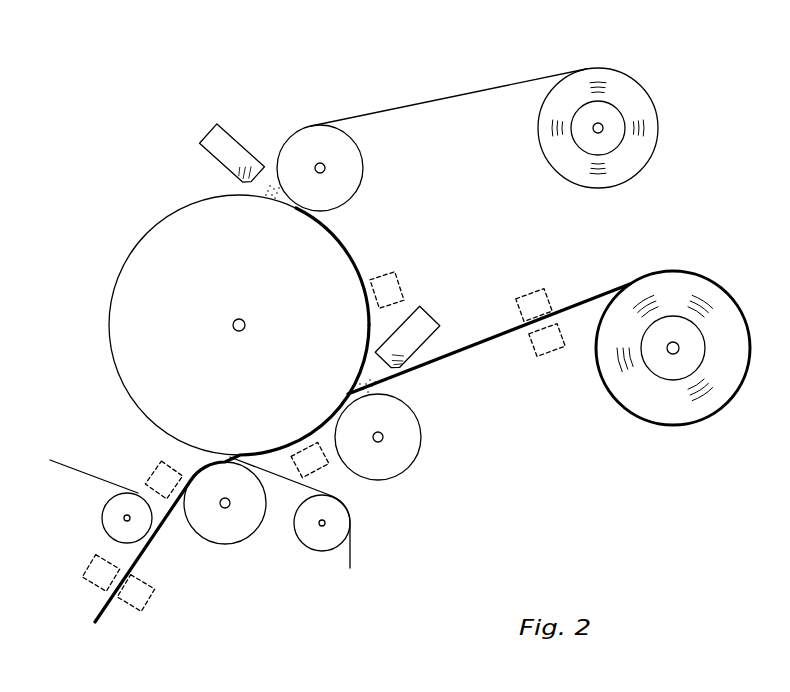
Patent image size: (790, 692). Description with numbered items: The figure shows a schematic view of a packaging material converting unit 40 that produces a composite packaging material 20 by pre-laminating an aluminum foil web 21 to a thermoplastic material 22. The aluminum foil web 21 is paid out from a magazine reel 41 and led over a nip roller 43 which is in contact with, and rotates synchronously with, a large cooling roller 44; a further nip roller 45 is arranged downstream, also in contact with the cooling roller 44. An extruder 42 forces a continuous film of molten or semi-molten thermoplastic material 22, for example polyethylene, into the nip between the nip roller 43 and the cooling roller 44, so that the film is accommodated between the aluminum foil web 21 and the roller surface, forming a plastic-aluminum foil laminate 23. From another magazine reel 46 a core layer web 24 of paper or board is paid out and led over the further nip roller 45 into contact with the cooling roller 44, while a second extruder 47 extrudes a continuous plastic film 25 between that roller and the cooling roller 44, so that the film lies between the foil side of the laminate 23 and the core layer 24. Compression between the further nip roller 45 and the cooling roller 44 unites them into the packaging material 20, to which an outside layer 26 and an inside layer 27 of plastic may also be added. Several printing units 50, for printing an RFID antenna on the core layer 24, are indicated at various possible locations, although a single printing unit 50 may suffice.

The packaging material 20 is at (102, 613).
The aluminum foil web 21 is at (435, 101).
The thermoplastic material film 22 is at (271, 182).
The plastic-aluminum foil laminate 23 is at (360, 265).
The core layer web 24 is at (577, 305).
The plastic film 25 is at (365, 385).
The outside layer 26 is at (352, 550).
The inside layer 27 is at (83, 470).
The packaging material converting unit 40 is at (140, 172).
The magazine reel 41 is at (642, 97).
The extruder 42 is at (207, 133).
The nip roller 43 is at (312, 137).
The cooling roller 44 is at (112, 298).
The further nip roller 45 is at (413, 444).
The magazine reel 46 is at (648, 412).
The second extruder 47 is at (420, 317).
The printing unit 50 is at (400, 283).